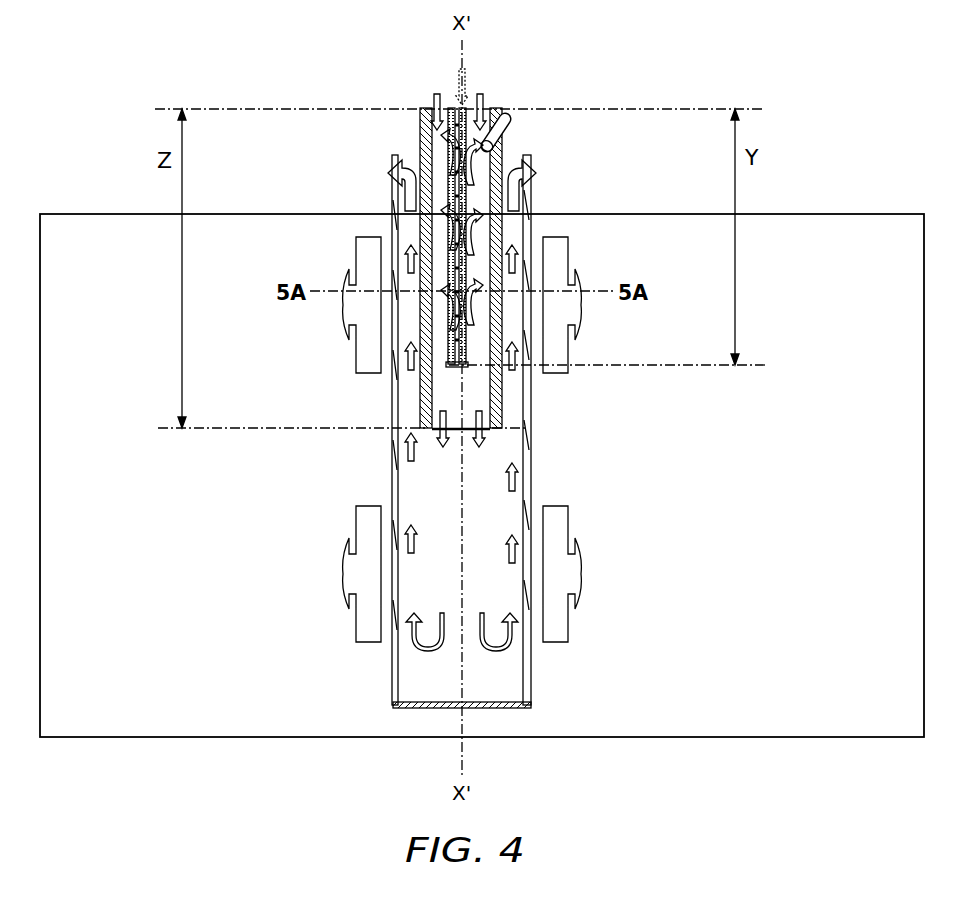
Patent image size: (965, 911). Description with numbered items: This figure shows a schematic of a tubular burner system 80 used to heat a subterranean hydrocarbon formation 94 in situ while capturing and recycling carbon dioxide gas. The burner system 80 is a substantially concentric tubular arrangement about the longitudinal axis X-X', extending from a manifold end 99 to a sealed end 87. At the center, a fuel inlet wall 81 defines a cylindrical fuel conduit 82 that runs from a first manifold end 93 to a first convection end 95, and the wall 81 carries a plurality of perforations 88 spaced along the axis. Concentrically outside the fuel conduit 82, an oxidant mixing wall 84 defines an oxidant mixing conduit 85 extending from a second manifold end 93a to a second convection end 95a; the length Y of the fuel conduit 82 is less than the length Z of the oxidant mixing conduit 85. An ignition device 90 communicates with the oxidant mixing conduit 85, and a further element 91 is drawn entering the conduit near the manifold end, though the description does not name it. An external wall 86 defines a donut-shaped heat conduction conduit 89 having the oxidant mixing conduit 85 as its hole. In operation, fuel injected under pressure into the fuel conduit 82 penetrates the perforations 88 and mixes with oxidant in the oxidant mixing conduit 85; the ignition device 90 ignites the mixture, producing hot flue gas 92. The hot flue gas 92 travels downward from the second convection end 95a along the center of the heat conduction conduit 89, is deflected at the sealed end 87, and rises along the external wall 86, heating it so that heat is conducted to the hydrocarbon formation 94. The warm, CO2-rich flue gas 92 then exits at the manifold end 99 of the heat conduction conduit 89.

The burner system 80 is at (610, 426).
The wall 81 is at (447, 104).
The fuel conduit 82 is at (466, 104).
The oxidant mixing wall 84 is at (420, 202).
The oxidant mixing conduit 85 is at (440, 245).
The external wall 86 is at (452, 172).
The sealed end 87 is at (514, 706).
The perforations 88 is at (468, 283).
The heat conduction conduit 89 is at (417, 497).
The ignition device 90 is at (500, 113).
The gas inlet 91 is at (486, 102).
The hot flue gas 92 is at (520, 470).
The first manifold end 93 is at (666, 108).
The second manifold end 93a is at (214, 108).
The hydrocarbon formation 94 is at (749, 574).
The first convection end 95 is at (716, 368).
The second convection end 95a is at (222, 430).
The manifold end 99 is at (531, 160).